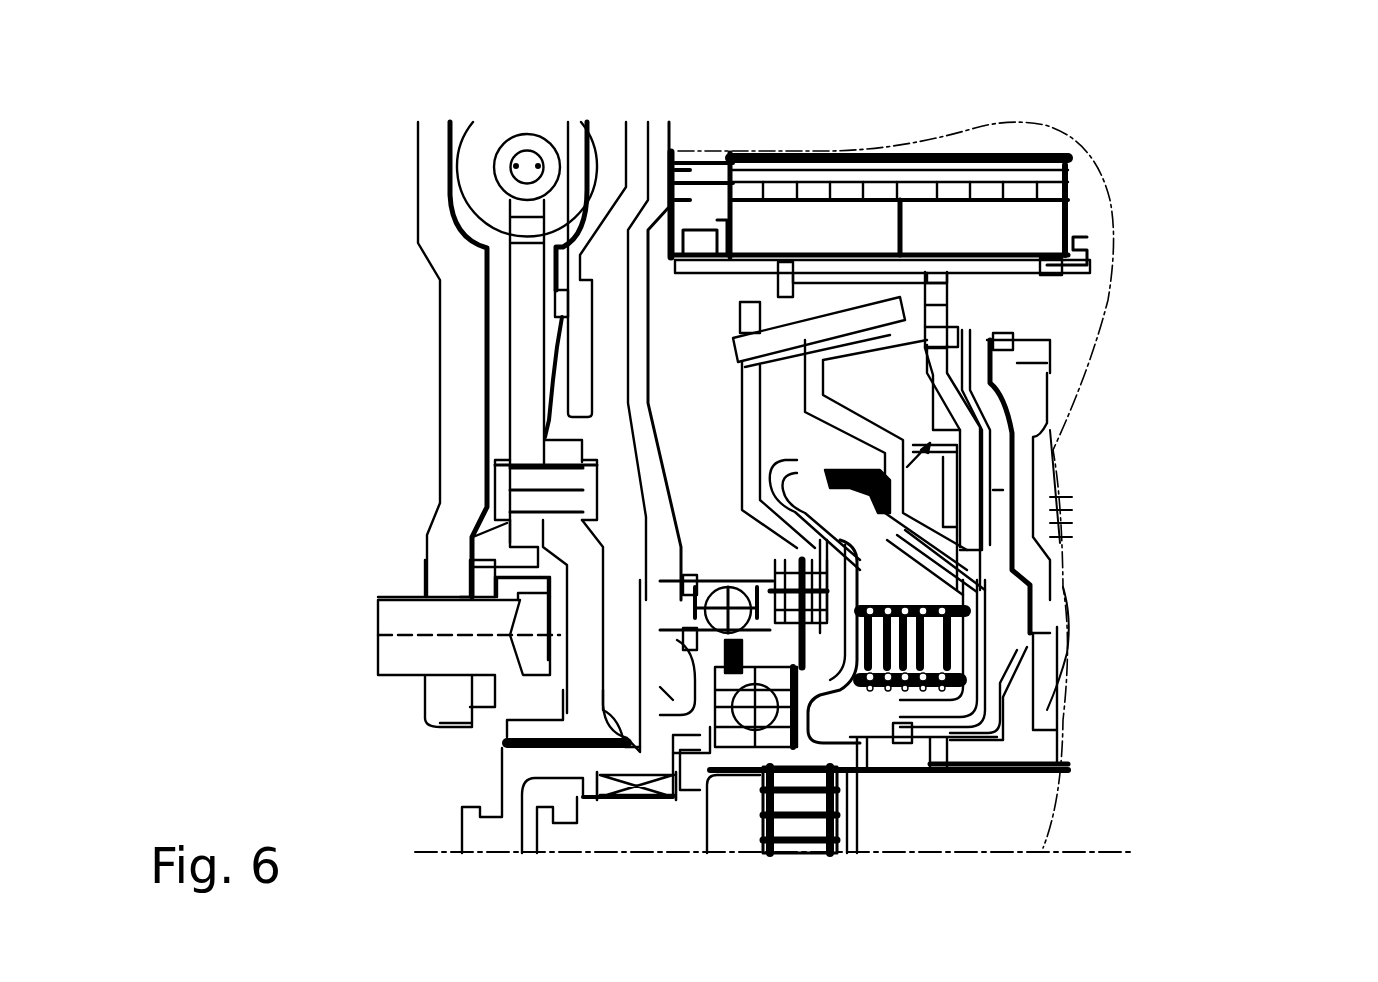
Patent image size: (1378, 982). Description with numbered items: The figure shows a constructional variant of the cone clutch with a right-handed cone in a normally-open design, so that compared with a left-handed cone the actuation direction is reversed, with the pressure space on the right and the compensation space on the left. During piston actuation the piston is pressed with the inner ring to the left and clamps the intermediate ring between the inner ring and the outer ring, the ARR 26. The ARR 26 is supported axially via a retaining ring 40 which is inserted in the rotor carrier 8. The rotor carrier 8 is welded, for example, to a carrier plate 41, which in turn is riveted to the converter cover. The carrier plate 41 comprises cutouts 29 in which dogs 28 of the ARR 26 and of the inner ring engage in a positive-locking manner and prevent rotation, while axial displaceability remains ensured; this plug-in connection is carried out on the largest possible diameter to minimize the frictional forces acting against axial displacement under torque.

The retaining ring 40 is at (773, 267).
The ARR 26 is at (845, 293).
The dogs 28 is at (938, 295).
The cutouts 29 is at (933, 317).
The rotor carrier 8 is at (1045, 265).
The carrier plate 41 is at (953, 403).